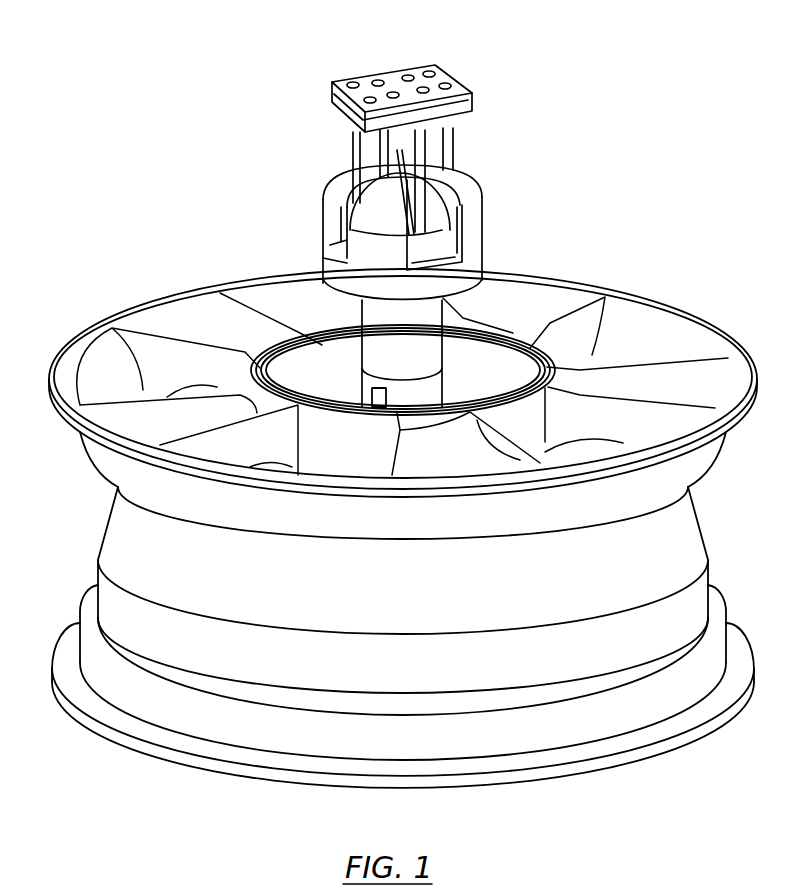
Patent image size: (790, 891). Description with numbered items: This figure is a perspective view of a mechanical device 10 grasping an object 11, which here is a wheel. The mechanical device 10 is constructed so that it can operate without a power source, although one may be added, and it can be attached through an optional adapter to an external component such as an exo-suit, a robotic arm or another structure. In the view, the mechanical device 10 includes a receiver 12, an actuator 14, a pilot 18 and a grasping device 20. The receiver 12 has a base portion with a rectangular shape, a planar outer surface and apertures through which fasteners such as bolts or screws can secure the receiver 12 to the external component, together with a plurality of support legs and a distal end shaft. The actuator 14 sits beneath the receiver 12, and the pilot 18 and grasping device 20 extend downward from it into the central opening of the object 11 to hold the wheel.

The mechanical device 10 is at (422, 210).
The object 11 is at (385, 528).
The receiver 12 is at (320, 95).
The actuator 14 is at (310, 253).
The pilot 18 is at (446, 389).
The grasping device 20 is at (366, 398).